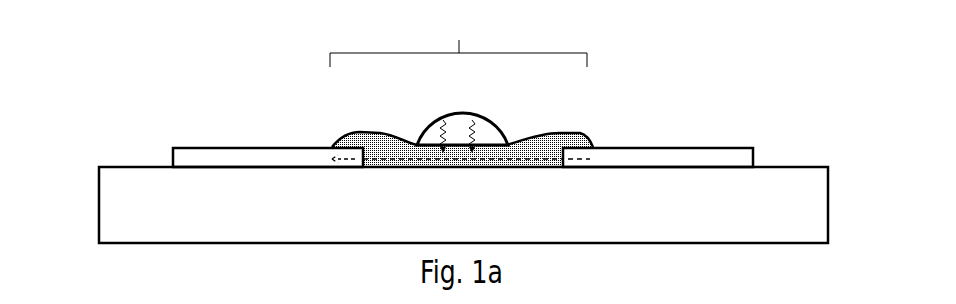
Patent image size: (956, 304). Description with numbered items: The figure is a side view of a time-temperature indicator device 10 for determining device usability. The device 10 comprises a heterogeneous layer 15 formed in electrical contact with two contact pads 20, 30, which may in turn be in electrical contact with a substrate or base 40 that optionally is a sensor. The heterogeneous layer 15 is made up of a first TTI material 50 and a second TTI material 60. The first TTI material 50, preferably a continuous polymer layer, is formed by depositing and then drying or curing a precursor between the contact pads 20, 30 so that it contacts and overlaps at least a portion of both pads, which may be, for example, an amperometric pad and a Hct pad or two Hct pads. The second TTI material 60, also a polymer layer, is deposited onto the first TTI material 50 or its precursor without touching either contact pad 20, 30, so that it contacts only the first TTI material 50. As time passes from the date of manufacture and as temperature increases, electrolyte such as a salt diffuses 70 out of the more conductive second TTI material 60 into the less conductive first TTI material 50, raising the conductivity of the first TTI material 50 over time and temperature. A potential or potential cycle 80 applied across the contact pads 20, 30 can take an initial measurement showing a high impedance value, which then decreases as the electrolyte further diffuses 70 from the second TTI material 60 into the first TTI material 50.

The TTI device 10 is at (118, 58).
The heterogeneous layer 15 is at (458, 40).
The contact pad 20 is at (188, 152).
The contact pad 30 is at (724, 151).
The substrate or base 40 is at (113, 216).
The first TTI material 50 is at (582, 136).
The second TTI material 60 is at (482, 127).
The diffusion of electrolyte 70 is at (438, 128).
The potential or potential cycle 80 is at (533, 158).